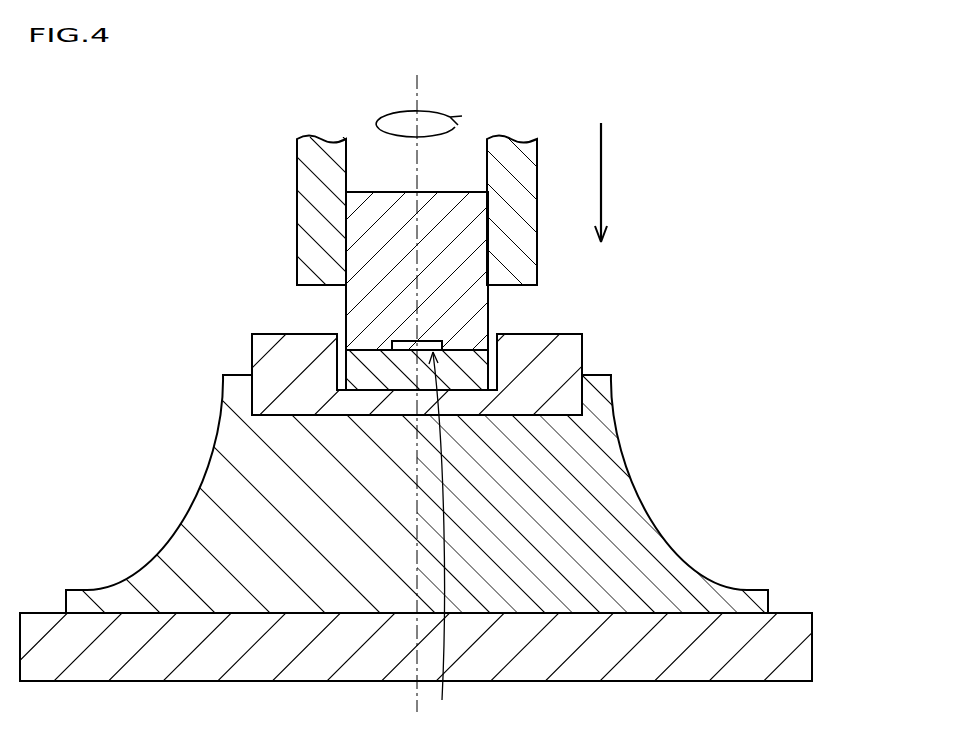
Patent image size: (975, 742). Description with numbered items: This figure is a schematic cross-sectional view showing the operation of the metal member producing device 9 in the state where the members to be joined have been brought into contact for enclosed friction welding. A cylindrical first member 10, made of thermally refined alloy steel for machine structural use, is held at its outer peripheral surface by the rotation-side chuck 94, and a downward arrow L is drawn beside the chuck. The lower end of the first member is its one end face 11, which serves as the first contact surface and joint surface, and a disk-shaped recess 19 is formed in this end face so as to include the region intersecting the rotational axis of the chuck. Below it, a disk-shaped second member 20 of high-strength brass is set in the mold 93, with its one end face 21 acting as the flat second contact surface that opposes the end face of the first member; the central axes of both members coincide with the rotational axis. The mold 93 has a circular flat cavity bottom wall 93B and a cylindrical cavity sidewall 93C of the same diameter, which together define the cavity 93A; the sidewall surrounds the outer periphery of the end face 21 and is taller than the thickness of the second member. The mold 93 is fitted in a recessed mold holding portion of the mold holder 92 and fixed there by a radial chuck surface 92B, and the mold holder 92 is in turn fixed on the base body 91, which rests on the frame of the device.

The processing system 9 is at (692, 128).
The first member 10 is at (470, 297).
The one end face of the first member 11 is at (445, 346).
The recess 19 is at (443, 539).
The second member 20 is at (465, 380).
The one end face of the second member 21 is at (458, 338).
The base body 91 is at (743, 664).
The mold holder 92 is at (690, 592).
The radial chuck surface 92B is at (262, 390).
The mold 93 is at (540, 388).
The cavity 93A is at (338, 332).
The cavity bottom wall 93B is at (393, 386).
The cavity sidewall 93C is at (350, 367).
The rotation-side chuck 94 is at (522, 170).
The load direction L is at (604, 175).